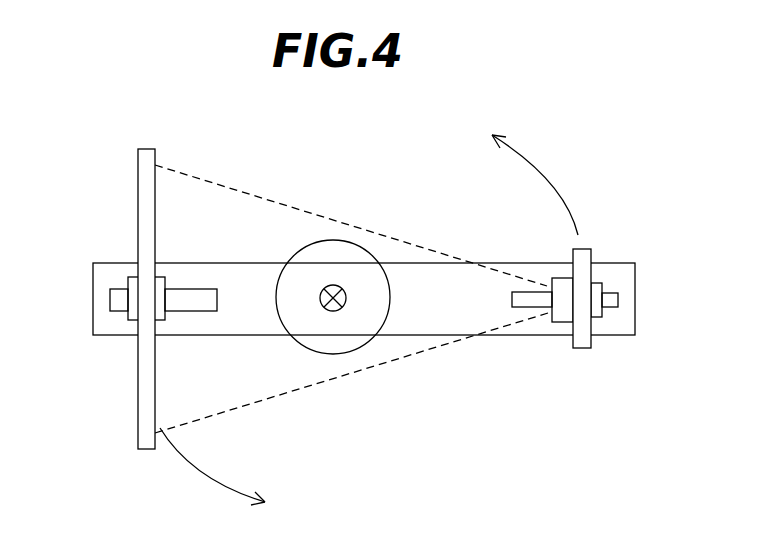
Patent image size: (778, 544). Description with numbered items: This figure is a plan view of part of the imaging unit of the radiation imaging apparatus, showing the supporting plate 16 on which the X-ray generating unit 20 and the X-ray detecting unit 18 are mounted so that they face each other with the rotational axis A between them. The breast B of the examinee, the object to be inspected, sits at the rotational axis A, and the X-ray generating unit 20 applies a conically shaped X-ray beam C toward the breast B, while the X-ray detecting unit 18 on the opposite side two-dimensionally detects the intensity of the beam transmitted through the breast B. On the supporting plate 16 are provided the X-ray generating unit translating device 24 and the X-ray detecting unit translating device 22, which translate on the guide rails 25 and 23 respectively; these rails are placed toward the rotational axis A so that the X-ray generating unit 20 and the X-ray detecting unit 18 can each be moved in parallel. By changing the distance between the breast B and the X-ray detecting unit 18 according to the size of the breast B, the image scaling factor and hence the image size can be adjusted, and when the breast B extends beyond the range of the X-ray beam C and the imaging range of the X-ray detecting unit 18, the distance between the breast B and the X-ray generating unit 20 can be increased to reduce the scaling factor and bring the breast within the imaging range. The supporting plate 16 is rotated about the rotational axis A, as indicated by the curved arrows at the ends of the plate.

The supporting plate 16 is at (517, 337).
The X-ray detecting unit 18 is at (155, 361).
The X-ray generating unit 20 is at (563, 285).
The X-ray detecting unit translating device 22 is at (133, 315).
The guide rail 23 is at (117, 302).
The X-ray generating unit translating device 24 is at (597, 312).
The guide rail 25 is at (618, 302).
The rotational axis A is at (345, 303).
The breast B is at (312, 238).
The X-ray beam C is at (307, 387).